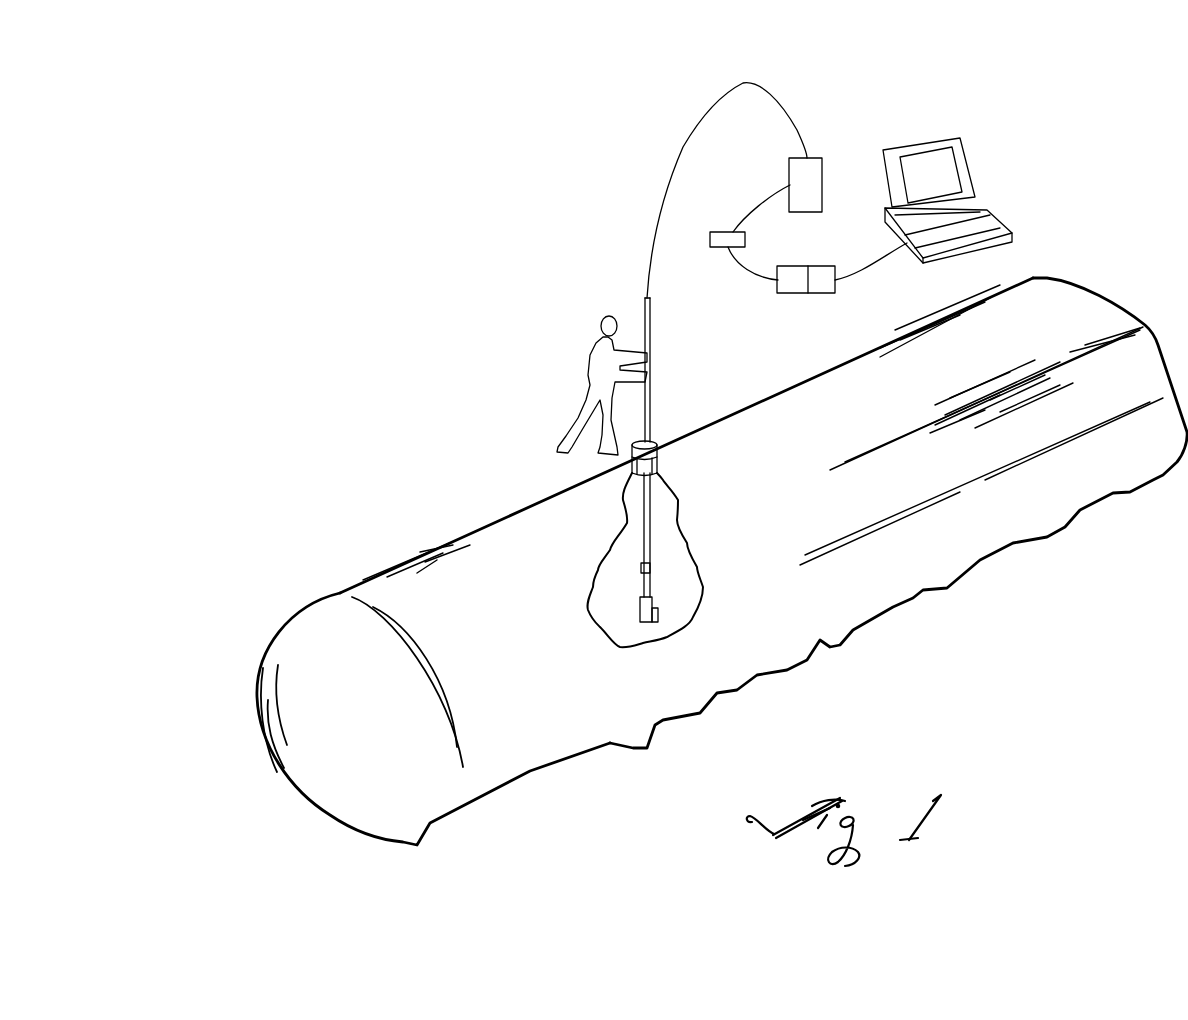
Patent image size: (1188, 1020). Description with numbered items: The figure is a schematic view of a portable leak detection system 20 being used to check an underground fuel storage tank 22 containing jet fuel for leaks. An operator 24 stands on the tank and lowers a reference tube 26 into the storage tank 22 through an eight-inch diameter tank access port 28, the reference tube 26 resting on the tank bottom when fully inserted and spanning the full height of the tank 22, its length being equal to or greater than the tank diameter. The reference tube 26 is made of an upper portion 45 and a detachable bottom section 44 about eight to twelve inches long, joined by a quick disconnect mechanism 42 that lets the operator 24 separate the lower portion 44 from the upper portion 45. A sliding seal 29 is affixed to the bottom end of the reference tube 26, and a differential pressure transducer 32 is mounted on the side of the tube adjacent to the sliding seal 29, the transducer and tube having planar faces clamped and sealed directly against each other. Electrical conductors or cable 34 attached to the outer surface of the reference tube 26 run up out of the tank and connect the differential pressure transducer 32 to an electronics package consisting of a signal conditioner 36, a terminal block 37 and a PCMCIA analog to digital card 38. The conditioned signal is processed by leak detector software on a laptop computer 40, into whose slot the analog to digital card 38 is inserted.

The leak detection system 20 is at (859, 174).
The underground fuel storage tank 22 is at (257, 680).
The operator 24 is at (592, 347).
The reference tube 26 is at (643, 520).
The tank access port 28 is at (653, 443).
The sliding seal 29 is at (643, 625).
The differential pressure transducer 32 is at (657, 613).
The electrical conductors/cable 34 is at (670, 183).
The signal conditioner 36 is at (790, 165).
The terminal block 37 is at (715, 232).
The PCMCIA A/D card 38 is at (808, 293).
The laptop computer 40 is at (972, 173).
The quick disconnect mechanism 42 is at (640, 568).
The bottom section of the reference tube 44 is at (640, 583).
The upper portion of the reference tube 45 is at (643, 300).